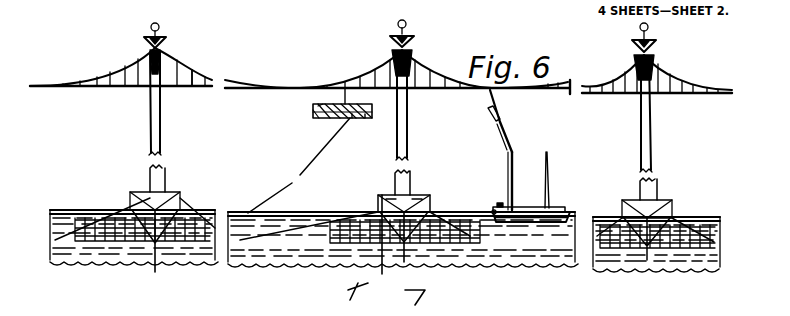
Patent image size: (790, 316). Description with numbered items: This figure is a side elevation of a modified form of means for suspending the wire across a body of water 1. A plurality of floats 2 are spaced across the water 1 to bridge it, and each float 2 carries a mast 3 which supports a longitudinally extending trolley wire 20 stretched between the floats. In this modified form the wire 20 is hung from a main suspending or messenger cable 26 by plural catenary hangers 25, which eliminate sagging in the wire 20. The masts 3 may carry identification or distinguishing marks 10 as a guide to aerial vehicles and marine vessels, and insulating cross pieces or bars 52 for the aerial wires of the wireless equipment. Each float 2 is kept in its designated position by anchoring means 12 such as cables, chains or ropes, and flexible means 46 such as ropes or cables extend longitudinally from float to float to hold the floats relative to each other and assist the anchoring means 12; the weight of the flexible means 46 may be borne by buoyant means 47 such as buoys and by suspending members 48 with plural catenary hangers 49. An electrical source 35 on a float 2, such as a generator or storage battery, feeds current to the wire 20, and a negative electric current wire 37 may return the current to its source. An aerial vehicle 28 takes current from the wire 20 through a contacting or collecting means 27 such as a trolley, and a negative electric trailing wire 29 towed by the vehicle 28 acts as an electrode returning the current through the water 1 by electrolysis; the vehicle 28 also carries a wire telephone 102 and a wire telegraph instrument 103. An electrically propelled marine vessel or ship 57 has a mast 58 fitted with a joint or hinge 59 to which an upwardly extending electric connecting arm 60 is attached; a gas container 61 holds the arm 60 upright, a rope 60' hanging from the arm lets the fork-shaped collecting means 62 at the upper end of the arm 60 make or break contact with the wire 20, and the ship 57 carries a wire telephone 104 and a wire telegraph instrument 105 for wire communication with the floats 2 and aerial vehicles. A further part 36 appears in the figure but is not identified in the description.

The identification or distinguishing marks 10 is at (150, 29).
The insulating cross pieces or bars 52 is at (162, 34).
The mast 3 is at (156, 131).
The main suspending or messenger wire or cable 26 is at (205, 73).
The catenary or plural hangers 25 is at (190, 79).
The flexible means 46 is at (112, 246).
The float 2 is at (136, 200).
The suspending means or members 48 is at (176, 200).
The anchoring or flexible means 12 is at (154, 253).
The plural catenary hangers or members 49 is at (186, 247).
The longitudinally extending wire 20 is at (446, 95).
The electric-current contacting or collecting means 27 is at (343, 102).
The wire telephone 102 is at (338, 119).
The wire telegraph instrument 103 is at (355, 119).
The aerial vehicle 28 is at (372, 119).
The negative electric trailing wire 29 is at (320, 149).
The electrical source 35 is at (378, 201).
The brace 36 is at (424, 197).
The negative electric current wire 37 is at (380, 266).
The wire telephone 104 is at (490, 211).
The electric current contacting or collecting means 62 is at (488, 93).
The gas container 61 is at (493, 121).
The electric connecting member or arm 60 is at (524, 129).
The member or rope 60' is at (489, 181).
The joint or hinge 59 is at (516, 153).
The mast 58 is at (517, 202).
The wire telegraph instrument 105 is at (499, 203).
The marine vessel or ship 57 is at (553, 210).
The body of water 1 is at (690, 216).
The buoyant means 47 is at (716, 218).